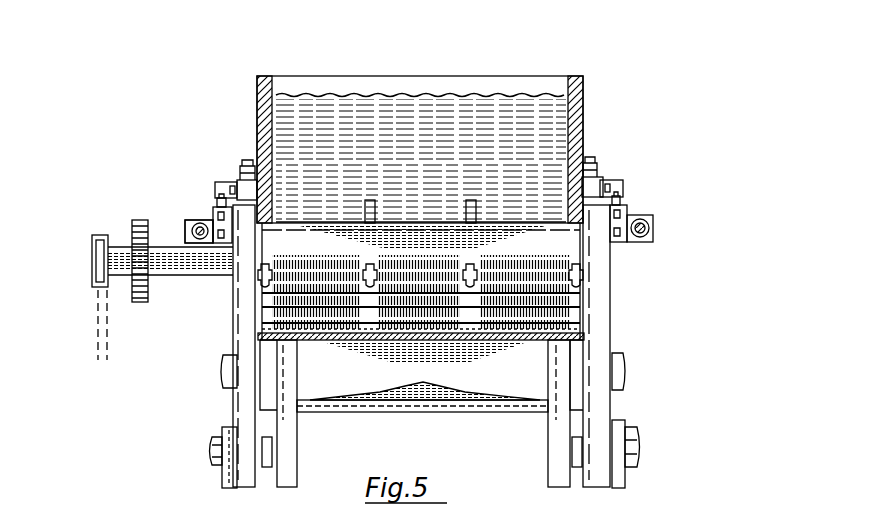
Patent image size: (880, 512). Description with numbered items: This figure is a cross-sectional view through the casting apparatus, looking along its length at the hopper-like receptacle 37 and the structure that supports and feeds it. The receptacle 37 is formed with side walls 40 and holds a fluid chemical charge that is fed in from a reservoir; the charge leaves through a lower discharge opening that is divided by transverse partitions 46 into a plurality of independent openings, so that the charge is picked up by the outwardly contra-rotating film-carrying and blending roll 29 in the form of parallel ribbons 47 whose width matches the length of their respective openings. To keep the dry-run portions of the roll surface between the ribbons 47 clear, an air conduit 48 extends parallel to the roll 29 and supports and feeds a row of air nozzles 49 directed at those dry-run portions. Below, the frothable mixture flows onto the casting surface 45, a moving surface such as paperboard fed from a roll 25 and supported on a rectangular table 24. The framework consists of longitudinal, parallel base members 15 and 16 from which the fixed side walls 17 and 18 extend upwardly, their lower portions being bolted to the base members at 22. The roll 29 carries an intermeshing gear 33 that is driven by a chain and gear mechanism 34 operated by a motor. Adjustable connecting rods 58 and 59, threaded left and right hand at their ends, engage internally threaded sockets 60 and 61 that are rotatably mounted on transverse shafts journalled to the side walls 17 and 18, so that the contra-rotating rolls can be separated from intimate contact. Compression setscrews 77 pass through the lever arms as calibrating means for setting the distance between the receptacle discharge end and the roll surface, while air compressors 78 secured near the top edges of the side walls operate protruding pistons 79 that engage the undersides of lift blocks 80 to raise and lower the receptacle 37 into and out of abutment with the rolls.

The base member 15 is at (228, 435).
The base member 16 is at (663, 445).
The fixed side wall 17 is at (247, 342).
The fixed side wall 18 is at (596, 342).
The securing point 22 is at (213, 449).
The table 24 is at (316, 354).
The roll 25 is at (519, 378).
The film-carrying and blending roll 29 is at (421, 281).
The gear 33 is at (132, 232).
The chain and gear mechanism 34 is at (95, 287).
The receptacle 37 is at (272, 125).
The side wall 40 is at (578, 115).
The casting surface 45 is at (585, 329).
The transverse partition 46 is at (471, 205).
The ribbon 47 is at (584, 263).
The air conduit 48 is at (582, 298).
The air nozzle 49 is at (268, 270).
The adjustable connecting rod 58 is at (188, 231).
The adjustable connecting rod 59 is at (655, 230).
The internally threaded socket 60 is at (190, 222).
The internally threaded socket 61 is at (655, 221).
The compression setscrew 77 is at (245, 168).
The air compressor 78 is at (222, 240).
The protruding piston 79 is at (220, 202).
The lift block 80 is at (215, 185).